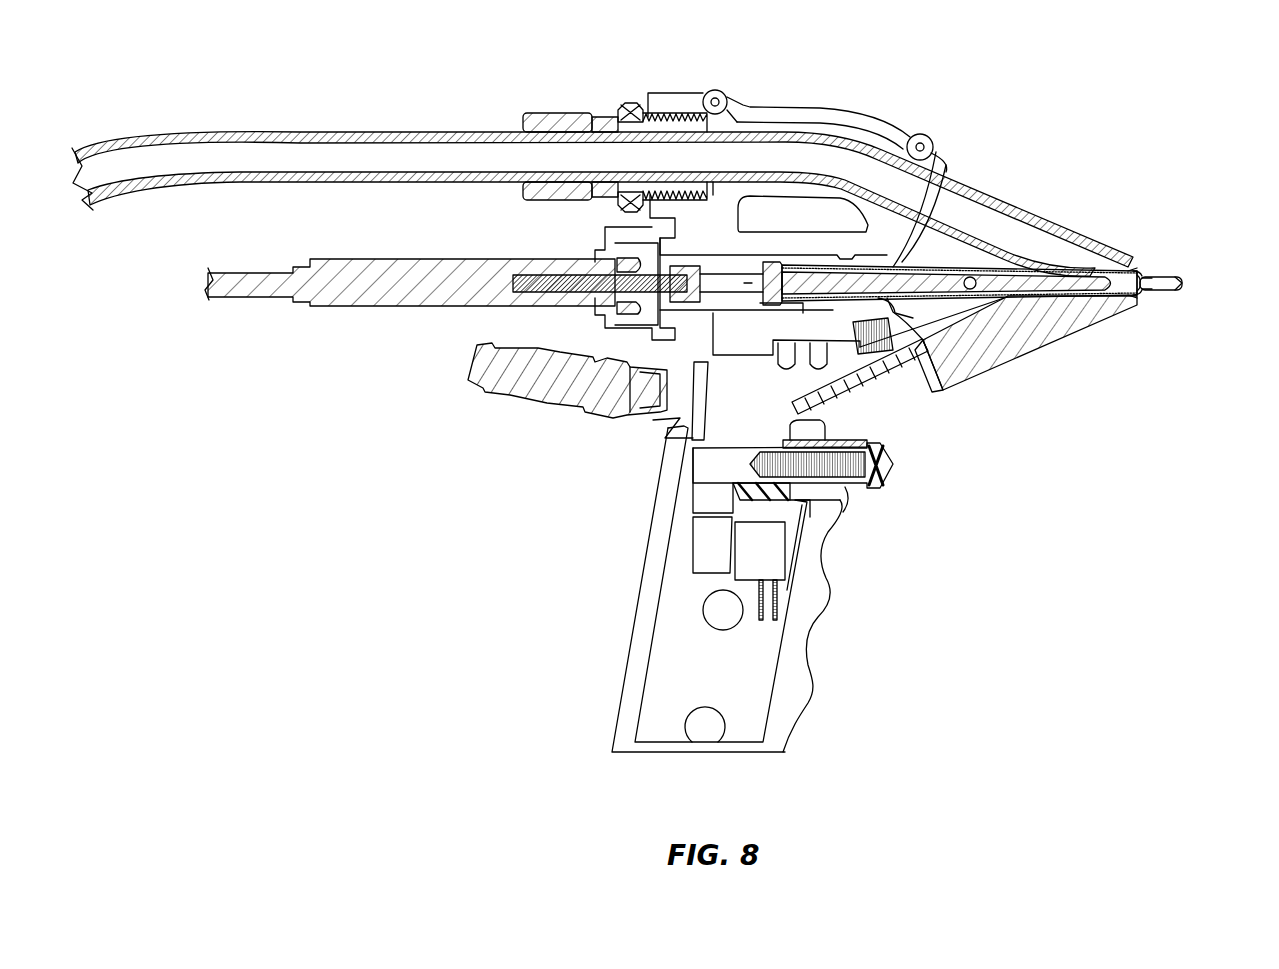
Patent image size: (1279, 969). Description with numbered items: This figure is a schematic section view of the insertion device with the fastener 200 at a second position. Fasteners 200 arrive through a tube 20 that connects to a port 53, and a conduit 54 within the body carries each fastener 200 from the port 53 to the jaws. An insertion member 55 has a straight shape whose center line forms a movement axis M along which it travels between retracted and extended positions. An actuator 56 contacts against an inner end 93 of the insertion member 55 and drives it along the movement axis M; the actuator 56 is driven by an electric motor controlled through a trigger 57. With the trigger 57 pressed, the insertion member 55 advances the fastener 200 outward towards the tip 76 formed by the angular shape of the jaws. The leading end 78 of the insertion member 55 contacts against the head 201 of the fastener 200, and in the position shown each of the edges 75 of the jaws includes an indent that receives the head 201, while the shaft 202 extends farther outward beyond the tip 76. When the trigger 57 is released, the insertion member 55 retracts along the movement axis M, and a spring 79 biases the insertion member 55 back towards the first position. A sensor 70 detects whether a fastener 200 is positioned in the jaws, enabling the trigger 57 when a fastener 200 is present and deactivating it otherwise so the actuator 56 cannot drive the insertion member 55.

The tube 20 is at (322, 142).
The port 53 is at (625, 108).
The conduit 54 is at (775, 155).
The spring 79 is at (830, 262).
The insertion member 55 is at (918, 270).
The actuator 56 is at (550, 307).
The inner end 93 is at (693, 397).
The sensor 70 is at (947, 382).
The movement axis M is at (1003, 358).
The trigger 57 is at (883, 462).
The fastener 200 is at (1183, 285).
The head 201 is at (1132, 268).
The shaft 202 is at (1180, 280).
The edge 75 is at (1139, 274).
The tip 76 is at (1145, 275).
The leading end 78 is at (1150, 279).